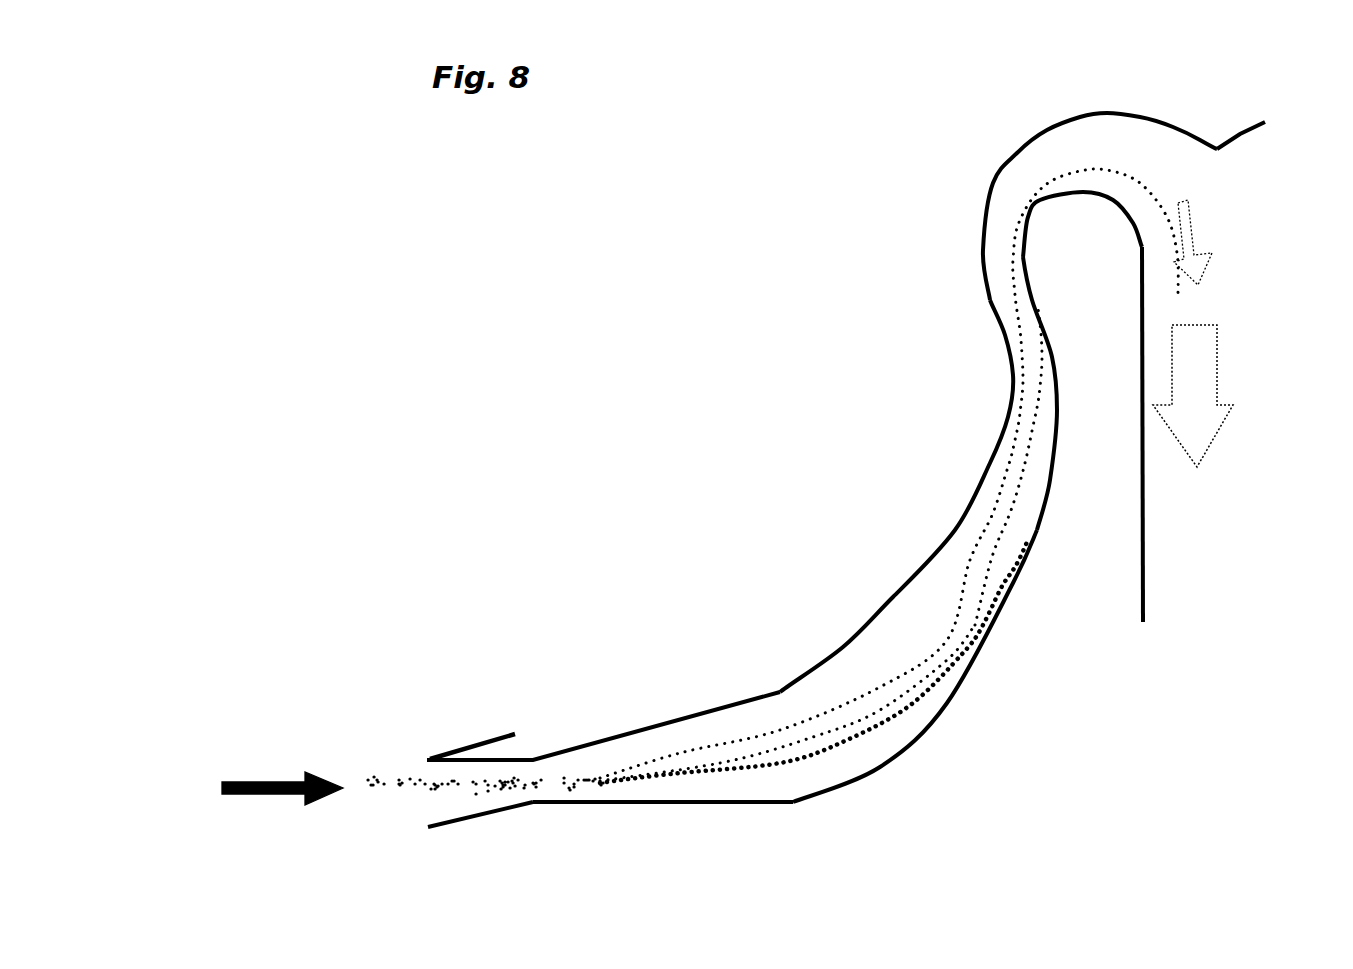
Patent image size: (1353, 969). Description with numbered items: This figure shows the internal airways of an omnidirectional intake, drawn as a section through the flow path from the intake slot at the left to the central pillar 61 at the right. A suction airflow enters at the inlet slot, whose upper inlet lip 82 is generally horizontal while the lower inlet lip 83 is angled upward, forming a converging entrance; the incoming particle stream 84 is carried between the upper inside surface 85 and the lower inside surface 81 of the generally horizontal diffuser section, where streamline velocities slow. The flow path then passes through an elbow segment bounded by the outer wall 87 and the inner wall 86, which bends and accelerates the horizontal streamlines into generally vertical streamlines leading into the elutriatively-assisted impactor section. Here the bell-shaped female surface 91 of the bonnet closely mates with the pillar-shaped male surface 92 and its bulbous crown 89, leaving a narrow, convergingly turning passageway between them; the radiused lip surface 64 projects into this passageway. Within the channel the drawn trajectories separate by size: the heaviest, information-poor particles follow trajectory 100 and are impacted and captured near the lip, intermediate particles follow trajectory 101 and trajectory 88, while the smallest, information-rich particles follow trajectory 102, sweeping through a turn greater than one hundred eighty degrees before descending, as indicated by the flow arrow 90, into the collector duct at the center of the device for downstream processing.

The central pillar 61 is at (1211, 507).
The wall 64 is at (1121, 332).
The lower wall 81 is at (489, 825).
The fin 82 is at (429, 756).
The lower wall inlet edge 83 is at (430, 829).
The particle stream 84 is at (408, 766).
The upper wall 85 is at (674, 743).
The inner wall curve 86 is at (885, 752).
The outer wall curve 87 is at (970, 533).
The particle trajectory 88 is at (1031, 372).
The inner loop apex 89 is at (1087, 183).
The flow direction arrow 90 is at (1218, 378).
The outer wall extension 91 is at (1234, 162).
The inner wall surface 92 is at (1055, 378).
The heavy particle trajectory 100 is at (946, 682).
The medium particle trajectory 101 is at (984, 585).
The light particle trajectory 102 is at (1076, 164).